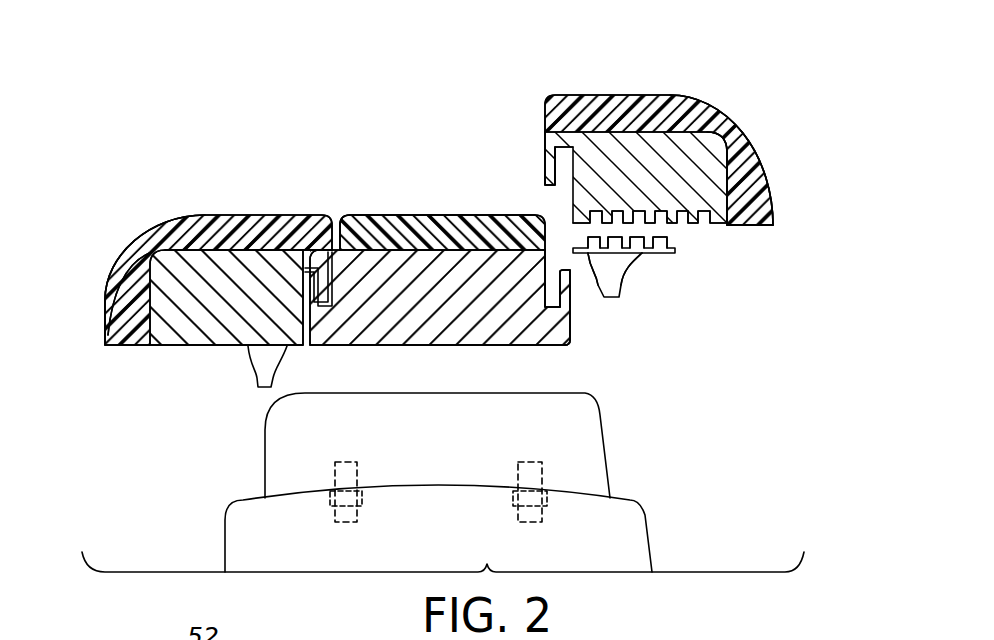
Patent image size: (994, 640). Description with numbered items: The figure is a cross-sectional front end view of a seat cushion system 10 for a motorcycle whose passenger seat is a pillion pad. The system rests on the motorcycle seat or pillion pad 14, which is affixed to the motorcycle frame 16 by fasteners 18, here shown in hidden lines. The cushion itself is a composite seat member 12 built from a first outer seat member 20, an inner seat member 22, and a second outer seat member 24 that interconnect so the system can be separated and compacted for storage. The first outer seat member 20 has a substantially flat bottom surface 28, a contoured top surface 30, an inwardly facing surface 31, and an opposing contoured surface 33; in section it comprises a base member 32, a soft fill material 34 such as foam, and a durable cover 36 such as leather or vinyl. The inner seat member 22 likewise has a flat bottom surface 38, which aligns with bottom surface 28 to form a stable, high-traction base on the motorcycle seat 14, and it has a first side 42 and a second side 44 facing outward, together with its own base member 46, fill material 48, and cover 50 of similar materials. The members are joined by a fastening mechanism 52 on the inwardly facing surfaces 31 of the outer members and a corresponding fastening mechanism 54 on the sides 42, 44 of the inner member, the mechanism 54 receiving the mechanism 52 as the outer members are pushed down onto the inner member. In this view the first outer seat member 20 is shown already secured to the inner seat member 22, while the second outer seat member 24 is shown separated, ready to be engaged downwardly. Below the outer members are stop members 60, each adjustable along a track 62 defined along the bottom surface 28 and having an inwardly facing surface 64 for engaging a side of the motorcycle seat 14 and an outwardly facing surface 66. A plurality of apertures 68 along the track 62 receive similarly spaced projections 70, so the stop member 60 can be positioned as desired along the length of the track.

The seat cushion system 10 is at (110, 210).
The seat member 12 is at (385, 92).
The motorcycle seat or pillion pad 14 is at (600, 396).
The motorcycle frame 16 is at (645, 512).
The fasteners 18 is at (357, 518).
The first outer seat member 20 is at (218, 215).
The inner seat member 22 is at (416, 215).
The second outer seat member 24 is at (641, 95).
The bottom surface 28 is at (125, 346).
The contoured top surface 30 is at (160, 226).
The inwardly facing surface 31 is at (342, 228).
The base member 32 is at (192, 346).
The contoured surface 33 is at (97, 343).
The fill material 34 is at (127, 300).
The cover 36 is at (128, 262).
The bottom surface 38 is at (425, 346).
The first side 42 is at (566, 318).
The second side 44 is at (300, 346).
The base member 46 is at (500, 345).
The fill material 48 is at (447, 225).
The cover 50 is at (496, 215).
The fastening mechanism 52 is at (558, 140).
The fastening mechanism 54 is at (560, 345).
The stop member 60 is at (625, 265).
The track 62 is at (675, 250).
The inwardly facing surface 64 is at (598, 280).
The outwardly facing surface 66 is at (627, 285).
The apertures 68 is at (706, 222).
The projections 70 is at (640, 252).